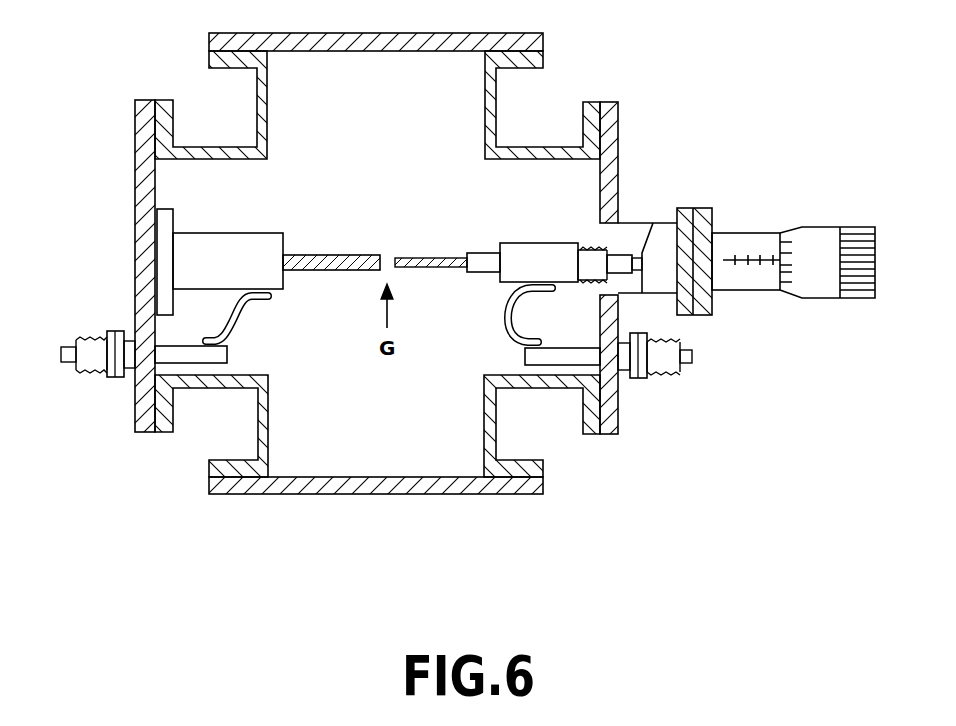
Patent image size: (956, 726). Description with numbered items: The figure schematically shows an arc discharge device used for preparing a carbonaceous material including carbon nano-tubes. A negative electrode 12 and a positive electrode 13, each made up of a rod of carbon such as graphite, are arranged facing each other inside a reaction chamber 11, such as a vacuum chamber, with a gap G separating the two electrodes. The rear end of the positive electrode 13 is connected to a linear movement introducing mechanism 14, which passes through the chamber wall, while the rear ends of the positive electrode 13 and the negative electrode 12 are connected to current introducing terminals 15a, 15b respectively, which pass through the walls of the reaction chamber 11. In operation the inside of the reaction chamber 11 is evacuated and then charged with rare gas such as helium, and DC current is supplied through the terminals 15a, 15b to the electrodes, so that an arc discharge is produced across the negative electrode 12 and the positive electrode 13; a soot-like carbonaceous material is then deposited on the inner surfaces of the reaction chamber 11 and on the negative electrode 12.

The reaction chamber 11 is at (172, 185).
The negative electrode 12 is at (305, 253).
The positive electrode 13 is at (416, 253).
The linear movement introducing mechanism 14 is at (852, 298).
The current introducing terminal 15a is at (692, 357).
The current introducing terminal 15b is at (61, 354).